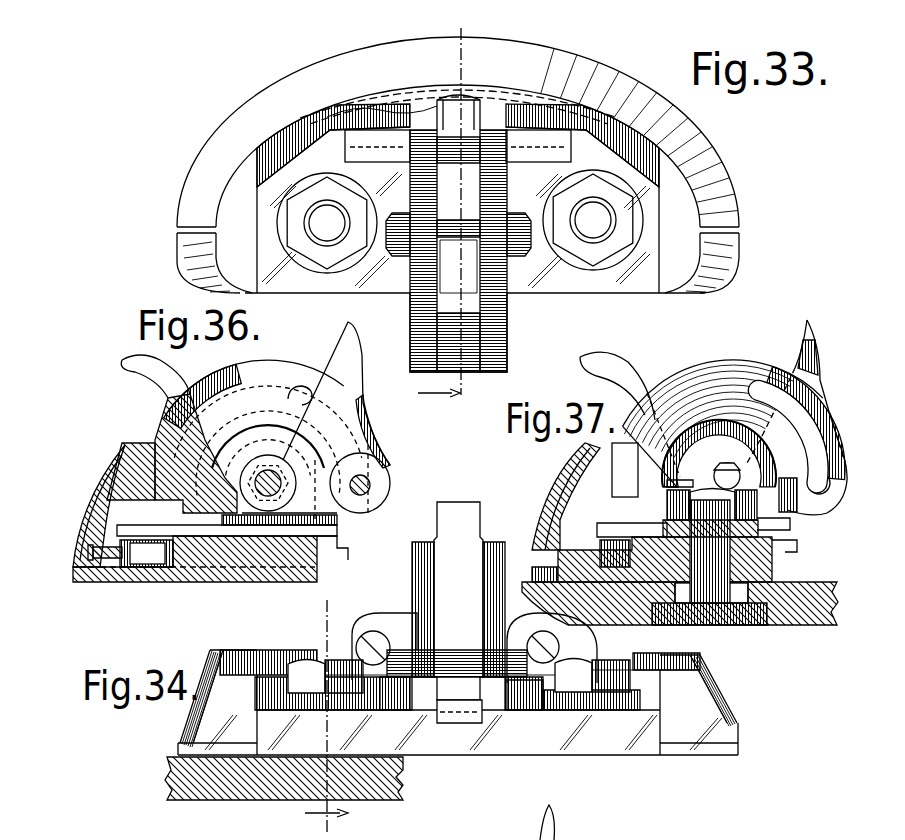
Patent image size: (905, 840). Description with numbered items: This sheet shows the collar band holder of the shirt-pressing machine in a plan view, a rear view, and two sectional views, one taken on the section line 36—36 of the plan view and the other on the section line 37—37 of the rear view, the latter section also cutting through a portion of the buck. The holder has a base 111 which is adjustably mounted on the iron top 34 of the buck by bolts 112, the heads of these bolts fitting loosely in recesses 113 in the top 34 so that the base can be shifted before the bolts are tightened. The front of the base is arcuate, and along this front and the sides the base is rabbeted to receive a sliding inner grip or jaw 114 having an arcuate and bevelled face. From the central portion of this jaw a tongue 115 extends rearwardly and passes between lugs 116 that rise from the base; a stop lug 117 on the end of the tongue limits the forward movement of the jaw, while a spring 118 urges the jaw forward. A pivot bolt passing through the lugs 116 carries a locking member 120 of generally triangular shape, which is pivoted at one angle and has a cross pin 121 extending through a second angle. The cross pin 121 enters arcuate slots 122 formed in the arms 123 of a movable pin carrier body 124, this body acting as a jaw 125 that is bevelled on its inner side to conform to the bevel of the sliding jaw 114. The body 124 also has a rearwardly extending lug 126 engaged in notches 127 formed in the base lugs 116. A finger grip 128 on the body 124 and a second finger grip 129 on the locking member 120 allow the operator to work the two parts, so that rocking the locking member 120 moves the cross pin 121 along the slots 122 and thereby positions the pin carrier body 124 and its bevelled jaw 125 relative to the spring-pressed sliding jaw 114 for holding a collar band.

In FIG. 37, the iron top 34 is at (806, 626).
In FIG. 34, the iron top 34 is at (405, 778).
In FIG. 33, the section line 36 is at (439, 213).
In FIG. 34, the section line 37 is at (326, 720).
In FIG. 33, the body casting 111 is at (318, 293).
In FIG. 36, the body casting 111 is at (213, 582).
In FIG. 37, the body casting 111 is at (774, 568).
In FIG. 34, the body casting 111 is at (545, 756).
In FIG. 33, the bolts 112 is at (460, 221).
In FIG. 37, the bolts 112 is at (689, 621).
In FIG. 34, the bolts 112 is at (320, 656).
In FIG. 37, the recesses 113 is at (750, 626).
In FIG. 36, the sliding inner grip or jaw 114 is at (76, 568).
In FIG. 34, the sliding inner grip or jaw 114 is at (212, 731).
In FIG. 36, the tongue 115 is at (227, 522).
In FIG. 37, the tongue 115 is at (642, 535).
In FIG. 36, the lugs 116 is at (338, 519).
In FIG. 37, the lugs 116 is at (792, 523).
In FIG. 36, the stop lug 117 is at (349, 552).
In FIG. 37, the stop lug 117 is at (799, 547).
In FIG. 34, the stop lug 117 is at (448, 724).
In FIG. 33, the spring 118 is at (503, 106).
In FIG. 36, the spring 118 is at (152, 568).
In FIG. 37, the spring 118 is at (615, 552).
In FIG. 34, the locking member 120 is at (560, 838).
In FIG. 33, the cross pin 121 is at (388, 232).
In FIG. 36, the cross pin 121 is at (284, 480).
In FIG. 37, the cross pin 121 is at (724, 462).
In FIG. 34, the cross pin 121 is at (337, 657).
In FIG. 36, the arcuate slots 122 is at (310, 391).
In FIG. 37, the arcuate slots 122 is at (774, 388).
In FIG. 33, the arms 123 is at (494, 206).
In FIG. 36, the arms 123 is at (266, 441).
In FIG. 37, the arms 123 is at (731, 365).
In FIG. 36, the movable pin carrier body 124 is at (155, 432).
In FIG. 37, the movable pin carrier body 124 is at (625, 470).
In FIG. 34, the movable pin carrier body 124 is at (405, 634).
In FIG. 33, the jaw 125 is at (306, 78).
In FIG. 36, the jaw 125 is at (95, 480).
In FIG. 37, the jaw 125 is at (540, 518).
In FIG. 34, the jaw 125 is at (734, 706).
In FIG. 36, the rearwardly extending lug 126 is at (225, 503).
In FIG. 37, the rearwardly extending lug 126 is at (680, 484).
In FIG. 36, the notches 127 is at (236, 470).
In FIG. 36, the finger grip 128 is at (142, 372).
In FIG. 37, the finger grip 128 is at (637, 372).
In FIG. 33, the finger grip 129 is at (433, 296).
In FIG. 36, the finger grip 129 is at (346, 338).
In FIG. 37, the finger grip 129 is at (814, 368).